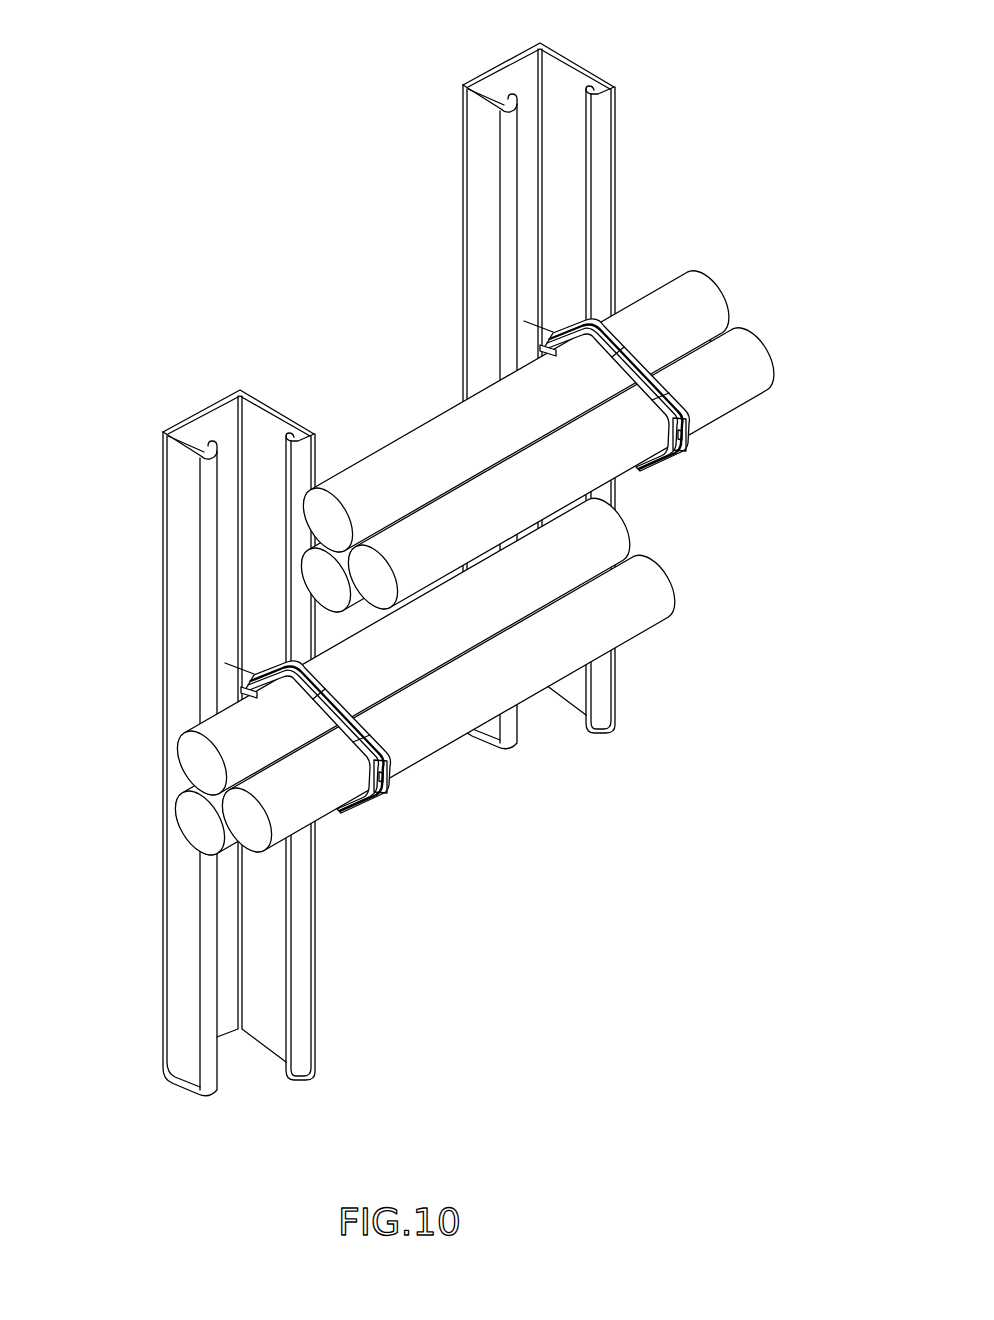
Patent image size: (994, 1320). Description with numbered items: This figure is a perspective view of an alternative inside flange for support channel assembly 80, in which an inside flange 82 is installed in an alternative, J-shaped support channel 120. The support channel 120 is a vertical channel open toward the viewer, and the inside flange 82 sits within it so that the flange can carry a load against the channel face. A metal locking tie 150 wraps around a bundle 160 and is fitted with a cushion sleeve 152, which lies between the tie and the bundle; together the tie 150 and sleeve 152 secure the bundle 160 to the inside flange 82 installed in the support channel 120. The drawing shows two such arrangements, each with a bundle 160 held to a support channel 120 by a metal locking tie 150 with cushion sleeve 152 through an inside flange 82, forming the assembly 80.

The inside flange for support channel assembly 80 is at (182, 268).
The inside flange 82 is at (558, 322).
The J-shaped support channel 120 is at (567, 77).
The metal locking tie 150 is at (688, 448).
The cushion sleeve 152 is at (690, 378).
The bundle 160 is at (692, 293).